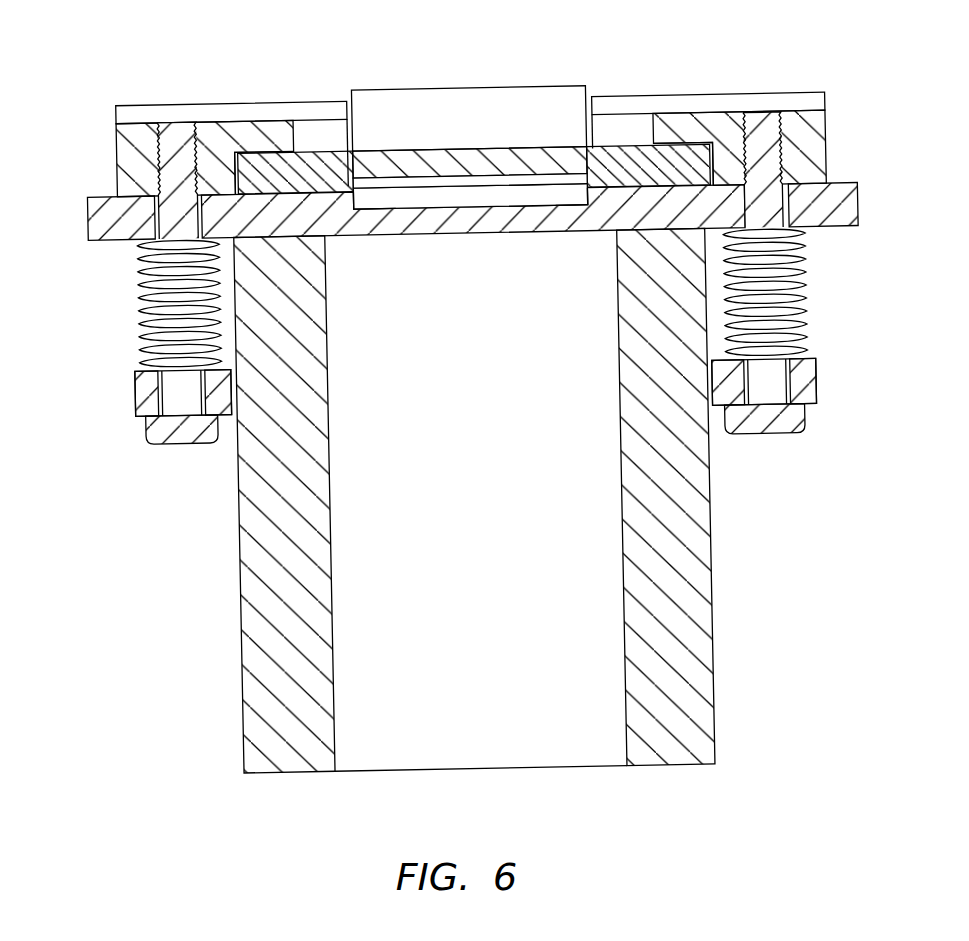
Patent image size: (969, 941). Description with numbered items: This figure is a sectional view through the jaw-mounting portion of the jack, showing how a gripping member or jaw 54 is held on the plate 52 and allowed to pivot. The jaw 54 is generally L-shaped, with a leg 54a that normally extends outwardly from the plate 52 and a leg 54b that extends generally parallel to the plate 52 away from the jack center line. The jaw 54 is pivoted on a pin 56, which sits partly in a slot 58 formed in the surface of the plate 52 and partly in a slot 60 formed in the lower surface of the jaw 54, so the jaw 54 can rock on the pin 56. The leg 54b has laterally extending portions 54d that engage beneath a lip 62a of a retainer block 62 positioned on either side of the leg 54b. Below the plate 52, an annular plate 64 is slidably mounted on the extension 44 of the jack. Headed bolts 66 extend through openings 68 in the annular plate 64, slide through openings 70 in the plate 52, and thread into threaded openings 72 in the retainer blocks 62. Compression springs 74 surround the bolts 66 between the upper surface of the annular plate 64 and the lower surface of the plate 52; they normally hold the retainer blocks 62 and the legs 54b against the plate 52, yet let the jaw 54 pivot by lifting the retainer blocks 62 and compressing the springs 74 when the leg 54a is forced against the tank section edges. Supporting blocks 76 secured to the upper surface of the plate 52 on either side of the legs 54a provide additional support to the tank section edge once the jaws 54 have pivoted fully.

The extension 44 is at (713, 578).
The plate 52 is at (473, 211).
The gripping member or jaw 54 is at (455, 77).
The leg 54a is at (537, 88).
The leg 54b is at (463, 200).
The laterally extending portion 54d is at (310, 160).
The pin 56 is at (512, 192).
The slot 58 is at (395, 208).
The slot 60 is at (578, 193).
The retainer block 62 is at (125, 158).
The lip 62a is at (212, 137).
The annular plate 64 is at (135, 395).
The headed bolt 66 is at (178, 402).
The opening 68 is at (214, 402).
The opening 70 is at (152, 217).
The threaded opening 72 is at (160, 180).
The compression spring 74 is at (140, 297).
The supporting block 76 is at (127, 112).